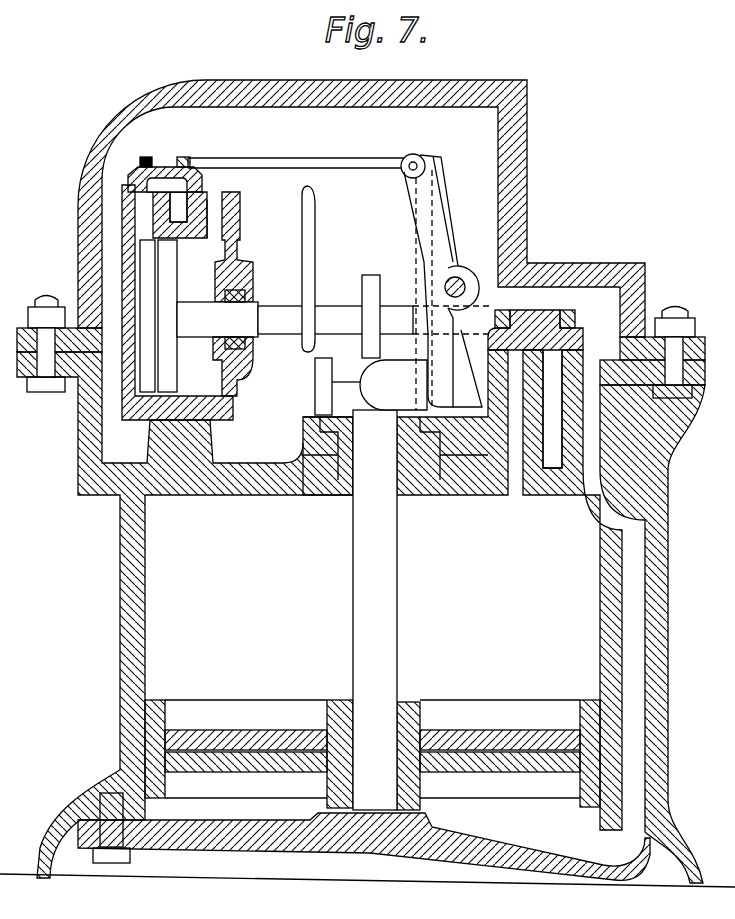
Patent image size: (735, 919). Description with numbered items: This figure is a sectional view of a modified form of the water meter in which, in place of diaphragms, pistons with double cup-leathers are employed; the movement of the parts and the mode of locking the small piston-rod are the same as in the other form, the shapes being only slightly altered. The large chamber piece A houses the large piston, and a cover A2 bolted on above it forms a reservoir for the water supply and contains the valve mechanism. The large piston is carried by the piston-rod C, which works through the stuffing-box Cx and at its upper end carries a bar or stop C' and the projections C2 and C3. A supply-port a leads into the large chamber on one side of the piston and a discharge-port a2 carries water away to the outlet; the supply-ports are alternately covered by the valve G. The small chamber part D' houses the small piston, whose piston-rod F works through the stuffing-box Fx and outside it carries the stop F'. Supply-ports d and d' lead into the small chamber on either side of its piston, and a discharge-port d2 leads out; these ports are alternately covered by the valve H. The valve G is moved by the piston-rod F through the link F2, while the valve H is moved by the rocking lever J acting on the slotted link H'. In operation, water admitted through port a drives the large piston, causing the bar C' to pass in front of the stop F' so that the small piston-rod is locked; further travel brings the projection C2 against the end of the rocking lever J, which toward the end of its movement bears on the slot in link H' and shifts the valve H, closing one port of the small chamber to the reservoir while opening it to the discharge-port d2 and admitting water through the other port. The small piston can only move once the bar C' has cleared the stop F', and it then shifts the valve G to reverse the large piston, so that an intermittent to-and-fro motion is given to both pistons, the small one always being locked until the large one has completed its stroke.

The large chamber piece A is at (361, 615).
The cover A2 is at (361, 220).
The supply-port a is at (608, 634).
The discharge-port a2 is at (552, 409).
The piston-rod C is at (375, 610).
The bar or stop C' is at (337, 386).
The projection C2 is at (393, 385).
The projection C3 is at (371, 316).
The stuffing-box Cx is at (316, 437).
The small chamber part D' is at (186, 303).
The supply-port d is at (173, 215).
The discharge-port d2 is at (180, 207).
The supply-port d' is at (215, 219).
The piston-rod F is at (295, 319).
The stop F' is at (305, 269).
The link F2 is at (492, 328).
The stuffing-box Fx is at (254, 344).
The valve G is at (535, 330).
The valve H is at (165, 174).
The link H' is at (296, 153).
The rocking lever J is at (441, 282).